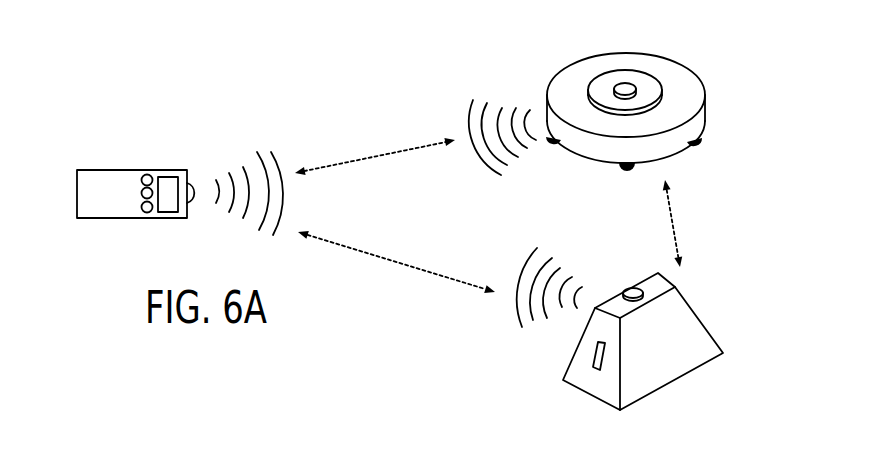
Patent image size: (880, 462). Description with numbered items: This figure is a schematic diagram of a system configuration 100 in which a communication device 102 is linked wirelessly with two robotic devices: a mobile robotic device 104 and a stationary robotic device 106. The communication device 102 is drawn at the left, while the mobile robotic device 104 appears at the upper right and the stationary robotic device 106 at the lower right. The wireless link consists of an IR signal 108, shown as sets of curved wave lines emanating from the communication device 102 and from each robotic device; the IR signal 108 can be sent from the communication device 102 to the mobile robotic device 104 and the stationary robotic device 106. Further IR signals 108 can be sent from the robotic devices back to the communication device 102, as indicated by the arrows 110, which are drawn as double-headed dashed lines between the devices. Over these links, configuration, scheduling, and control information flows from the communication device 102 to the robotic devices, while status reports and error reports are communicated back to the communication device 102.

The system configuration 100 is at (122, 86).
The communication device 102 is at (105, 168).
The mobile robotic device 104 is at (658, 70).
The stationary robotic device 106 is at (707, 327).
The IR signal 108 is at (256, 158).
The arrows 110 is at (380, 153).